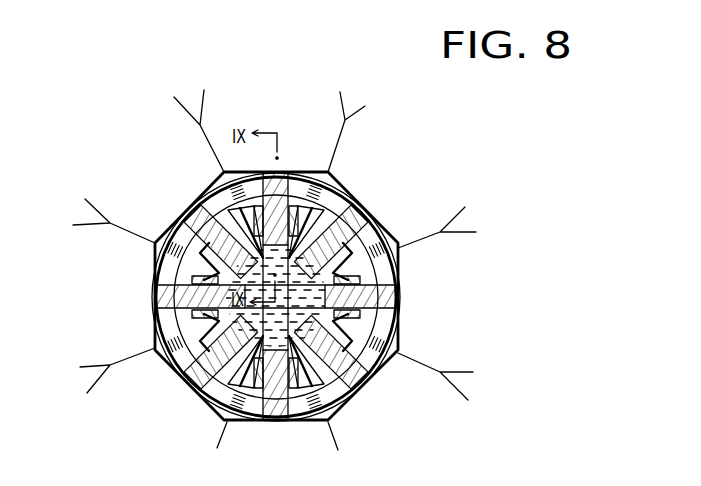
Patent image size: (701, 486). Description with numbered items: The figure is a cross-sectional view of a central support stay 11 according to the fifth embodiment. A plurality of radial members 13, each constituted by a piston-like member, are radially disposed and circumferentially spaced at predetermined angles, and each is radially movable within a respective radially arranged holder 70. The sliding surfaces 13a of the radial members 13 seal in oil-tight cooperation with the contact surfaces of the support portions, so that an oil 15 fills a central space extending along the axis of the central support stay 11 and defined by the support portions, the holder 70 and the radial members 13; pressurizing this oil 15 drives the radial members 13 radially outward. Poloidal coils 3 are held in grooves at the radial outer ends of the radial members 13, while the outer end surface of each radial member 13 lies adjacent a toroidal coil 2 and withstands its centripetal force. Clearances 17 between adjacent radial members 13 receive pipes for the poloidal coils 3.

The toroidal coil 2 is at (128, 260).
The poloidal coil 3 is at (180, 351).
The central support stay 11 is at (352, 181).
The radial member 13 is at (362, 210).
The sliding surface 13a is at (393, 259).
The oil 15 is at (210, 405).
The clearance 17 is at (332, 406).
The holder 70 is at (251, 424).